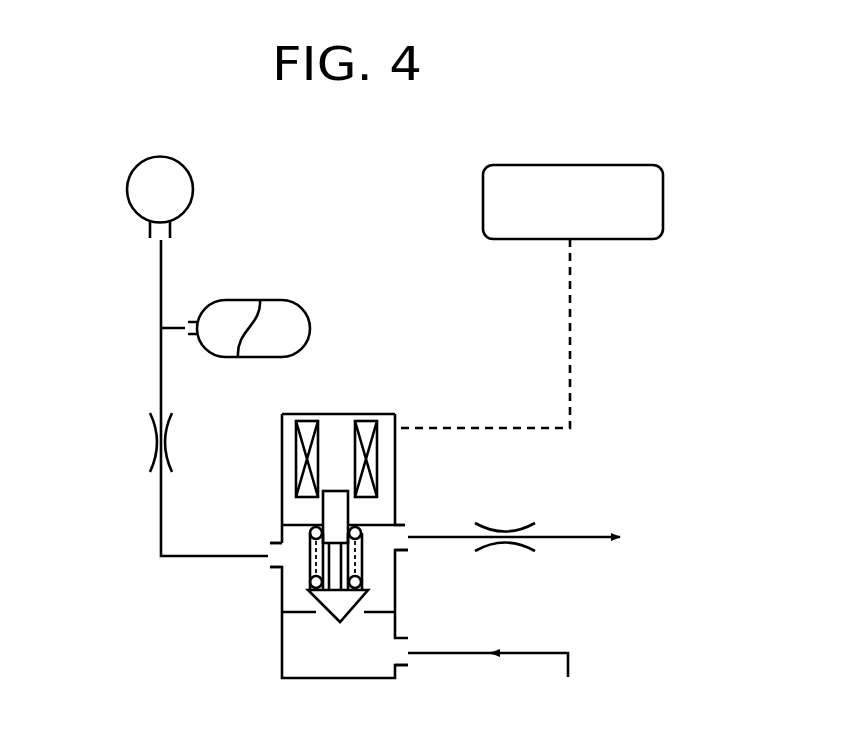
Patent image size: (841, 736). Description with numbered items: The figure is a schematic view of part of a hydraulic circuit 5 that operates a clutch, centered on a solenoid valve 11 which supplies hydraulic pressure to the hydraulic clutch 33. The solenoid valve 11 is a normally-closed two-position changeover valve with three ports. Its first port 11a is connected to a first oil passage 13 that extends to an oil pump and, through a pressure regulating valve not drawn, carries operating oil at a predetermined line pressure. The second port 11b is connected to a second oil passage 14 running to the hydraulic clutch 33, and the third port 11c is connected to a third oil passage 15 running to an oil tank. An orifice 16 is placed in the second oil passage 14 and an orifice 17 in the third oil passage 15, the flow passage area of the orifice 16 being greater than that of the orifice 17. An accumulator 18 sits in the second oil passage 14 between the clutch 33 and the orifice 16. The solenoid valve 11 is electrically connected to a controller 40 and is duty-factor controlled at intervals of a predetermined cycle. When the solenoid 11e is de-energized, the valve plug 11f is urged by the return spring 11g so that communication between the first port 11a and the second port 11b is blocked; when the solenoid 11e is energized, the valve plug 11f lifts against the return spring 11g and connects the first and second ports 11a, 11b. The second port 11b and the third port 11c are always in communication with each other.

The hydraulic circuit 5 is at (92, 232).
The solenoid valve 11 is at (280, 666).
The first port 11a is at (403, 665).
The second port 11b is at (270, 567).
The third port 11c is at (403, 550).
The solenoid 11e is at (377, 460).
The valve plug 11f is at (335, 620).
The return spring 11g is at (362, 575).
The first oil passage 13 is at (535, 650).
The second oil passage 14 is at (161, 512).
The third oil passage 15 is at (577, 532).
The orifice 16 is at (152, 441).
The orifice 17 is at (505, 530).
The accumulator 18 is at (276, 300).
The hydraulic clutch 33 is at (193, 188).
The controller 40 is at (620, 240).